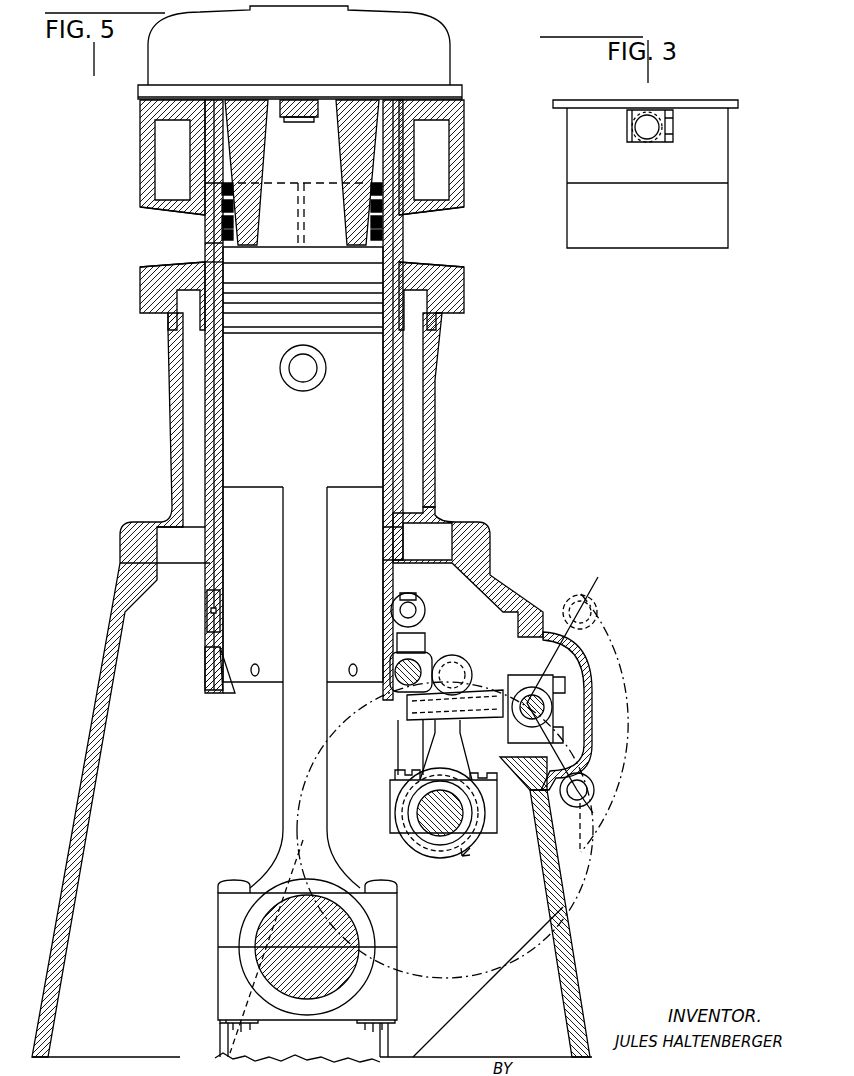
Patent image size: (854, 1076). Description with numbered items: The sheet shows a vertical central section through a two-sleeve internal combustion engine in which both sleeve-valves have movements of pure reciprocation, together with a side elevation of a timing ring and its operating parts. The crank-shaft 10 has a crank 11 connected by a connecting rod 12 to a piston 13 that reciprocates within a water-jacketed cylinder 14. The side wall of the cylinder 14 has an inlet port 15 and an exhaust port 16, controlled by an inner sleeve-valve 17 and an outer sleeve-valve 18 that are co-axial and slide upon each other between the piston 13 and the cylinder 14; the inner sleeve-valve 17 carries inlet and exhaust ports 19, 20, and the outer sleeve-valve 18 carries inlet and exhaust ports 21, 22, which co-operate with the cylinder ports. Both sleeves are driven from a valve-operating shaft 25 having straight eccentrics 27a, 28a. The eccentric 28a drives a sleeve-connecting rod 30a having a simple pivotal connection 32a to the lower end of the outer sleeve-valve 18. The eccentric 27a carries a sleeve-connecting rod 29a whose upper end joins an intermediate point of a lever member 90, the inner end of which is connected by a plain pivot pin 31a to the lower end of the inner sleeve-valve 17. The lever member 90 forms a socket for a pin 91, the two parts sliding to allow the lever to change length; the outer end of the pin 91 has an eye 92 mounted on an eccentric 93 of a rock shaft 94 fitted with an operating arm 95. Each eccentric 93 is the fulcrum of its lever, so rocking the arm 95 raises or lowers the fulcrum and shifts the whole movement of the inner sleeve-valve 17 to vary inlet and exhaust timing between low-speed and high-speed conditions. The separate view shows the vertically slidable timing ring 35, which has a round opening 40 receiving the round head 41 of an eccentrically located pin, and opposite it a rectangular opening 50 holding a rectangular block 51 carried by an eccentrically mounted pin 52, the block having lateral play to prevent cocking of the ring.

In FIG. 5, the crank-shaft 10 is at (220, 1047).
In FIG. 5, the crank 11 is at (272, 907).
In FIG. 5, the connecting rod 12 is at (293, 730).
In FIG. 5, the piston 13 is at (370, 437).
In FIG. 5, the cylinder 14 is at (397, 380).
In FIG. 5, the inlet port 15 is at (431, 237).
In FIG. 5, the exhaust port 16 is at (172, 237).
In FIG. 5, the inner sleeve-valve 17 is at (383, 535).
In FIG. 5, the outer sleeve-valve 18 is at (213, 573).
In FIG. 5, the inlet port of inner sleeve-valve 19 is at (383, 203).
In FIG. 5, the exhaust port of inner sleeve-valve 20 is at (218, 218).
In FIG. 5, the inlet port of outer sleeve-valve 21 is at (387, 225).
In FIG. 5, the exhaust port of outer sleeve-valve 22 is at (217, 260).
In FIG. 5, the valve-operating shaft 25 is at (452, 857).
In FIG. 5, the eccentric 27a is at (480, 807).
In FIG. 5, the eccentric 28a is at (413, 850).
In FIG. 5, the sleeve-connecting rod 29a is at (444, 778).
In FIG. 5, the sleeve-connecting rod 30a is at (398, 738).
In FIG. 5, the pivot pin 31a is at (418, 665).
In FIG. 5, the pivotal connection 32a is at (414, 606).
In FIG. 3, the timing ring 35 is at (728, 163).
In FIG. 3, the round opening 40 is at (665, 108).
In FIG. 3, the round head 41 is at (630, 124).
In FIG. 3, the rectangular opening 50 is at (675, 127).
In FIG. 3, the rectangular block 51 is at (670, 138).
In FIG. 3, the pin 52 is at (647, 132).
In FIG. 5, the lever member 90 is at (484, 665).
In FIG. 5, the pin 91 is at (498, 740).
In FIG. 5, the eye 92 is at (545, 712).
In FIG. 5, the eccentric 93 is at (552, 700).
In FIG. 5, the rock shaft 94 is at (518, 670).
In FIG. 5, the operating arm 95 is at (592, 776).